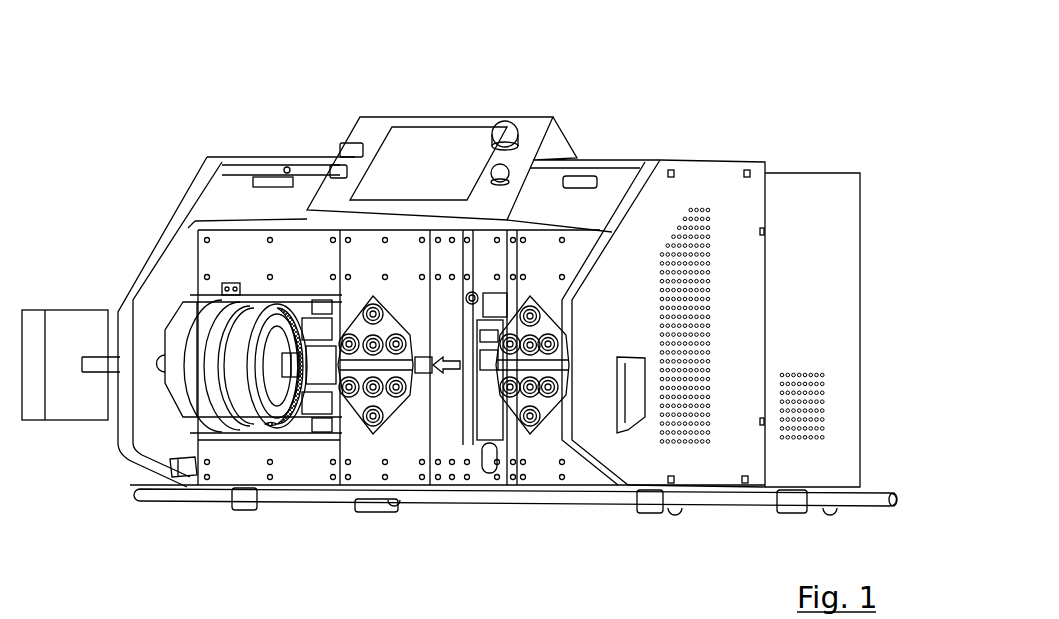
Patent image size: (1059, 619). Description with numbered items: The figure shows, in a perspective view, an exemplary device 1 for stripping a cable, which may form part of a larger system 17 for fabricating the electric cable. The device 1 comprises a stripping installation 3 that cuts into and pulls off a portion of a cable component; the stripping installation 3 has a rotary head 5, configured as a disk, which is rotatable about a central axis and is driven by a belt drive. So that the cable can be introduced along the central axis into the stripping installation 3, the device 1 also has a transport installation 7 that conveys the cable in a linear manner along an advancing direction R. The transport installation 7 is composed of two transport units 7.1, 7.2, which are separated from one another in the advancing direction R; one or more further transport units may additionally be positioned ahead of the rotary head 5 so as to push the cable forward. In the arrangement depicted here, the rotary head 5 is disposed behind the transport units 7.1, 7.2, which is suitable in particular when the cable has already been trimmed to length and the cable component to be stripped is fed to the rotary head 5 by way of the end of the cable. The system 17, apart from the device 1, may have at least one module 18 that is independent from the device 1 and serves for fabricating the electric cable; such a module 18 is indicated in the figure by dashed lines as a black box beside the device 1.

The device 1 is at (628, 142).
The stripping installation 3 is at (305, 280).
The rotary head 5 is at (288, 410).
The transport installation 7 is at (462, 250).
The first transport unit 7.1 is at (395, 287).
The second transport unit 7.2 is at (540, 287).
The system 17 is at (93, 184).
The module 18 is at (57, 308).
The advancing direction R is at (443, 372).